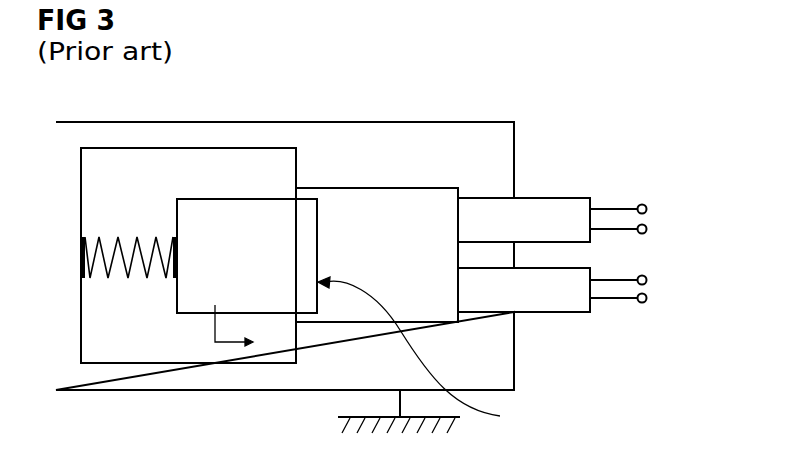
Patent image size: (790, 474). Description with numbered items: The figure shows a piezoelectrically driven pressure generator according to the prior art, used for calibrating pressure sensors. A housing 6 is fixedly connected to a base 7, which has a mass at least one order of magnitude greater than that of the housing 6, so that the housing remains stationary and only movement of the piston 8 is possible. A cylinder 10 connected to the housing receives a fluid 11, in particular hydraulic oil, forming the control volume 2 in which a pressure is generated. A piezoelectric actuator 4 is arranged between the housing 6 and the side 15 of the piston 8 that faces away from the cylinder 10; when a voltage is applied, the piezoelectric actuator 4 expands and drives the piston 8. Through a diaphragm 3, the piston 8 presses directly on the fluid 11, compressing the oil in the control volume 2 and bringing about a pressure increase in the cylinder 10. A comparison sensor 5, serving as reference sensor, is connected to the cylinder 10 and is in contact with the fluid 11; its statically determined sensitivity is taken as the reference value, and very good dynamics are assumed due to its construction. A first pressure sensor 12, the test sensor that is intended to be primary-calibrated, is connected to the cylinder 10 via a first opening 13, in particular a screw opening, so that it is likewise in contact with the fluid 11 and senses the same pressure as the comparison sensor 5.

The control volume 2 is at (437, 188).
The diaphragm 3 is at (418, 353).
The piezoelectric actuator 4 is at (107, 277).
The comparison sensor 5 is at (545, 198).
The housing 6 is at (490, 122).
The base 7 is at (350, 422).
The piston 8 is at (218, 148).
The cylinder 10 is at (325, 188).
The fluid 11 is at (403, 277).
The first pressure sensor 12 is at (570, 313).
The first opening 13 is at (497, 313).
The side of the piston facing away from the cylinder 15 is at (176, 296).